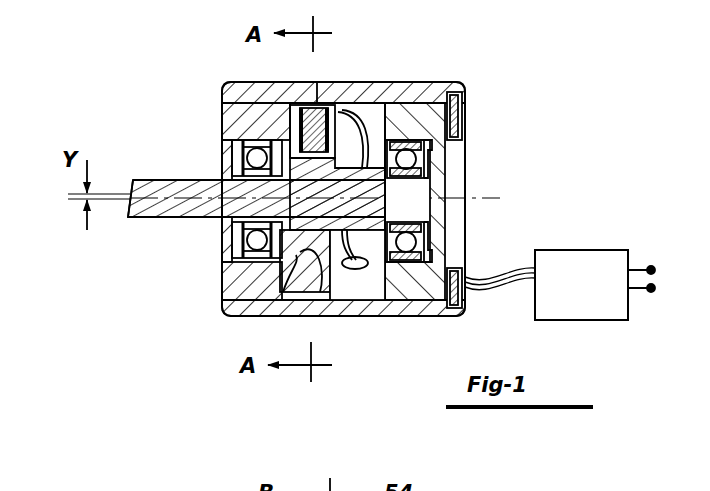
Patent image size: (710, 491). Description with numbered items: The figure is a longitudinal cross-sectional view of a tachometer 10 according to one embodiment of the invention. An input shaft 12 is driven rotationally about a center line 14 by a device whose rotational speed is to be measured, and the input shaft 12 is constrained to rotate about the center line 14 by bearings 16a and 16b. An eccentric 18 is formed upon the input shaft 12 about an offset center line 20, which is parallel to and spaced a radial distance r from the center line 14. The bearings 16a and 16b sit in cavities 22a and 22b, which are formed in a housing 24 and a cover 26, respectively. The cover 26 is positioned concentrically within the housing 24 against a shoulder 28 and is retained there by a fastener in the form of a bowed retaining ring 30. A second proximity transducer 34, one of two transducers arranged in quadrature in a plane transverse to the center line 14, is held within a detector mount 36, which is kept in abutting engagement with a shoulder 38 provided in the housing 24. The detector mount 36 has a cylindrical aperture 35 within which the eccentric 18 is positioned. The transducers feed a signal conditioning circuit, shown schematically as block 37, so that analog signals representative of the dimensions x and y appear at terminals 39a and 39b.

The tachometer 10 is at (707, 112).
The input shaft 12 is at (190, 219).
The center line 14 is at (117, 196).
The bearing 16a is at (238, 153).
The bearing 16b is at (430, 166).
The eccentric 18 is at (280, 130).
The offset center line 20 is at (116, 194).
The cavity 22a is at (236, 265).
The cavity 22b is at (465, 243).
The housing 24 is at (373, 102).
The cover 26 is at (466, 206).
The shoulder 28 is at (387, 99).
The bowed retaining ring 30 is at (463, 112).
The second proximity transducer 34 is at (335, 96).
The cylindrical aperture 35 is at (314, 294).
The detector mount 36 is at (249, 299).
The signal conditioning circuit 37 is at (567, 253).
The shoulder 38 is at (283, 292).
The terminal 39a is at (652, 268).
The terminal 39b is at (654, 289).